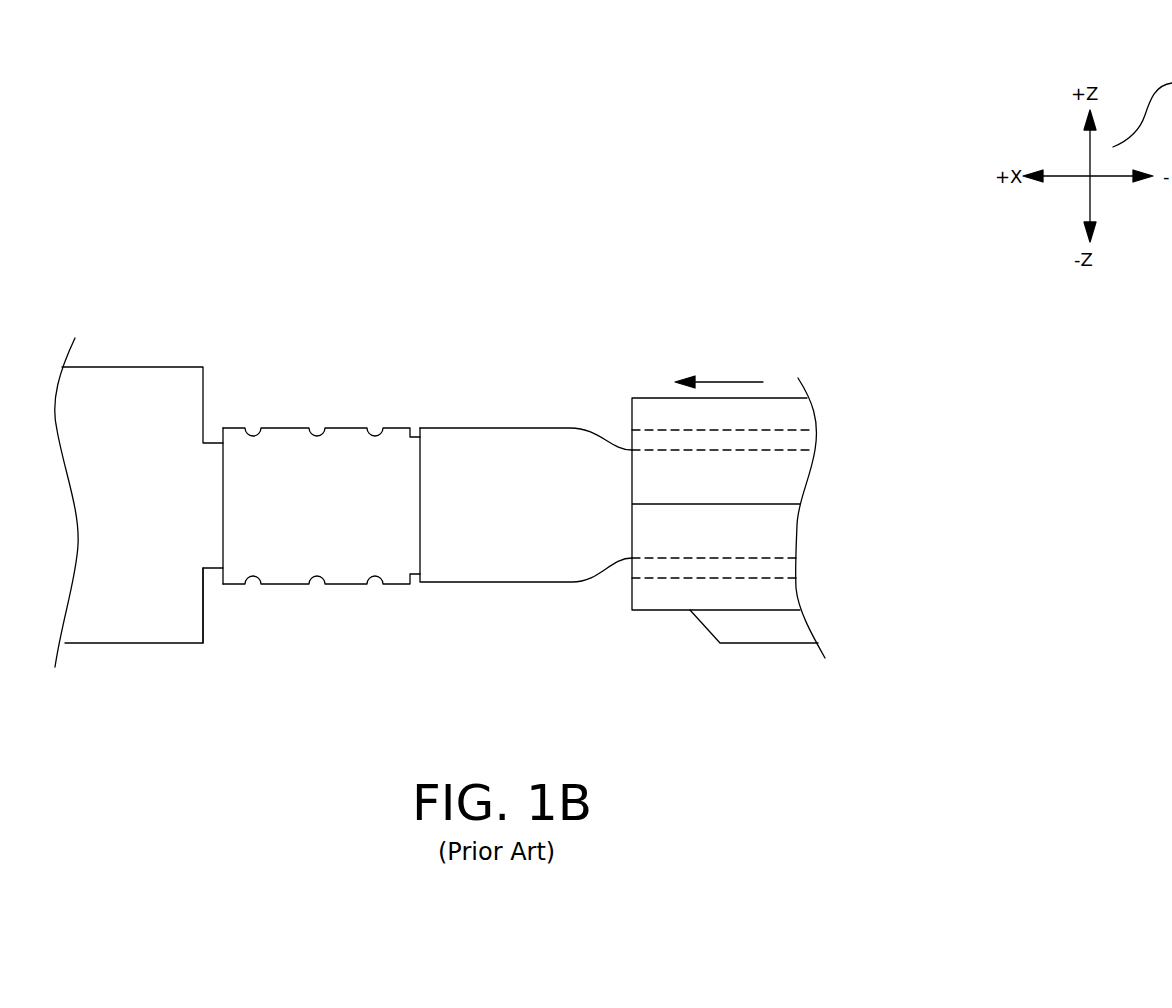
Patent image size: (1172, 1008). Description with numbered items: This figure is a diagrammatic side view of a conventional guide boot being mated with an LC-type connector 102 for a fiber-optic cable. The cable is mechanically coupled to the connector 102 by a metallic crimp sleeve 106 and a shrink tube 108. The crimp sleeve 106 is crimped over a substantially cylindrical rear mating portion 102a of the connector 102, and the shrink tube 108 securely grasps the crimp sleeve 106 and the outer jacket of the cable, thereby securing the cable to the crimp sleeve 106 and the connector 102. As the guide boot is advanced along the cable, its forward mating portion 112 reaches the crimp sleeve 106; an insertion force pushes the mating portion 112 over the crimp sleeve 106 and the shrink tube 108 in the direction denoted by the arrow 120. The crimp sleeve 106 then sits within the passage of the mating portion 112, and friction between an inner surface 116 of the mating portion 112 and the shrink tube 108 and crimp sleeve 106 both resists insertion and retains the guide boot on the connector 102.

The LC-type connector 102 is at (112, 366).
The rear mating portion 102a is at (213, 571).
The crimp sleeve 106 is at (288, 427).
The shrink tube 108 is at (443, 428).
The mating portion 112 is at (659, 630).
The inner surface 116 is at (632, 445).
The arrow 120 is at (713, 381).